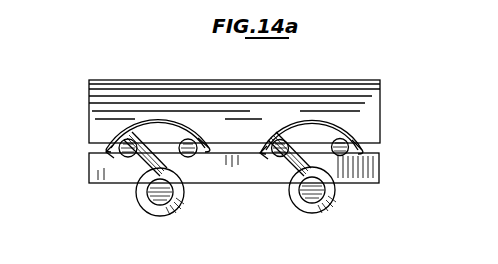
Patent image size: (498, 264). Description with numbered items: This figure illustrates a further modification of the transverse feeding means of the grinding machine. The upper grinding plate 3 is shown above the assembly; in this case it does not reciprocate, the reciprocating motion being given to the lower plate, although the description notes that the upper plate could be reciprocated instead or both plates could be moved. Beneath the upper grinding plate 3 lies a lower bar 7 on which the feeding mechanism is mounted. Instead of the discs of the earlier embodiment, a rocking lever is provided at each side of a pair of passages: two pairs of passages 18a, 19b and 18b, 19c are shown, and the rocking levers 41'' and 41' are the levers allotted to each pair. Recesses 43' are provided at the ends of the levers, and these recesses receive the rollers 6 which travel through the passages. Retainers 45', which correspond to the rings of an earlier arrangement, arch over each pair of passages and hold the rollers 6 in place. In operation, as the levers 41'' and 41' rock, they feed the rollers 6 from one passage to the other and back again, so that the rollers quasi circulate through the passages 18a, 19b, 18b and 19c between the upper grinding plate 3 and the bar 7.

The upper grinding plate 3 is at (348, 92).
The base bar 7 is at (368, 178).
The rollers 6 is at (113, 145).
The retainers 45' is at (234, 127).
The rocking lever 41'' is at (141, 192).
The rocking lever 41' is at (296, 190).
The passage 19b is at (137, 135).
The passage 19c is at (282, 160).
The recesses 43' is at (158, 171).
The passage 18a is at (199, 136).
The passage 18b is at (381, 152).